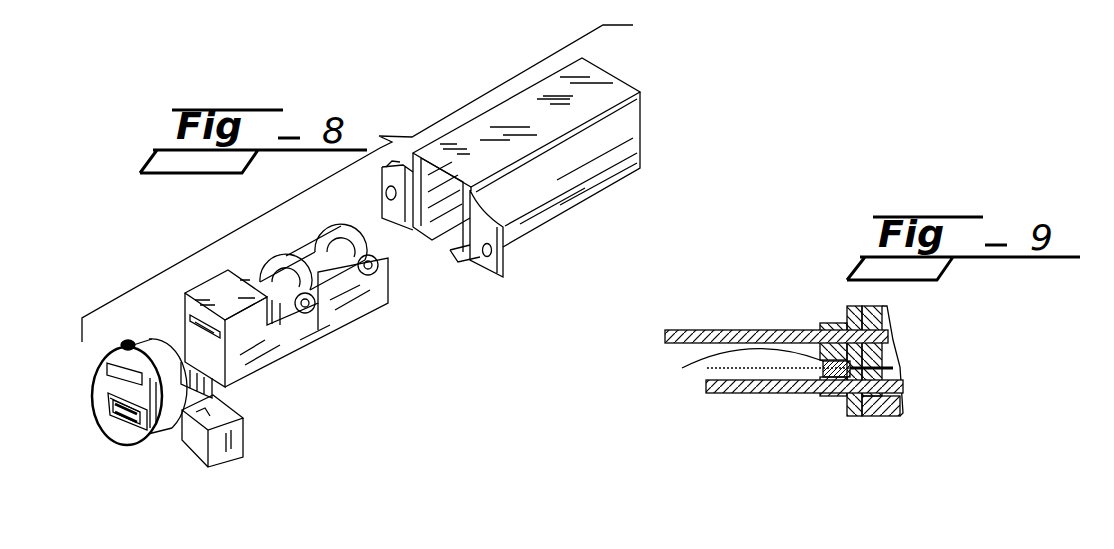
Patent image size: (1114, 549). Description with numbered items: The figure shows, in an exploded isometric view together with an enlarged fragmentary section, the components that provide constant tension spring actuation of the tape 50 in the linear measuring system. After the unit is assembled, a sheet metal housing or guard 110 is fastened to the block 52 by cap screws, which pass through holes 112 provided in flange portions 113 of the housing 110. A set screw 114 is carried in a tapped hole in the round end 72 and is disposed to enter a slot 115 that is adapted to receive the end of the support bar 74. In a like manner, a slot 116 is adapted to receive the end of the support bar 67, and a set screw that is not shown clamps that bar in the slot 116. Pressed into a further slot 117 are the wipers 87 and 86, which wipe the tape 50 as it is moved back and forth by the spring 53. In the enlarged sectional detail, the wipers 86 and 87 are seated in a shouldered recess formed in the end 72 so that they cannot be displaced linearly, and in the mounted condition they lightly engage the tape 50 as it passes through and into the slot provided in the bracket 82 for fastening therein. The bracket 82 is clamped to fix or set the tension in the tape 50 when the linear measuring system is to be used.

In FIG. 8, the sheet metal housing or guard 110 is at (642, 128).
In FIG. 8, the holes 112 is at (380, 197).
In FIG. 8, the flange portions 113 is at (392, 163).
In FIG. 8, the bracket 82 is at (280, 352).
In FIG. 8, the spring 53 is at (297, 250).
In FIG. 8, the round end 72 is at (145, 446).
In FIG. 9, the round end 72 is at (845, 322).
In FIG. 8, the block 52 is at (240, 434).
In FIG. 9, the block 52 is at (855, 418).
In FIG. 8, the set screw 114 is at (122, 342).
In FIG. 8, the slot 115 is at (107, 370).
In FIG. 8, the slot 117 is at (108, 407).
In FIG. 8, the slot 116 is at (127, 430).
In FIG. 8, the wiper 86 is at (110, 420).
In FIG. 9, the wiper 86 is at (825, 392).
In FIG. 8, the wiper 87 is at (110, 395).
In FIG. 9, the wiper 87 is at (707, 366).
In FIG. 9, the support bar 74 is at (771, 306).
In FIG. 9, the tape 50 is at (707, 376).
In FIG. 9, the support bar 67 is at (752, 394).